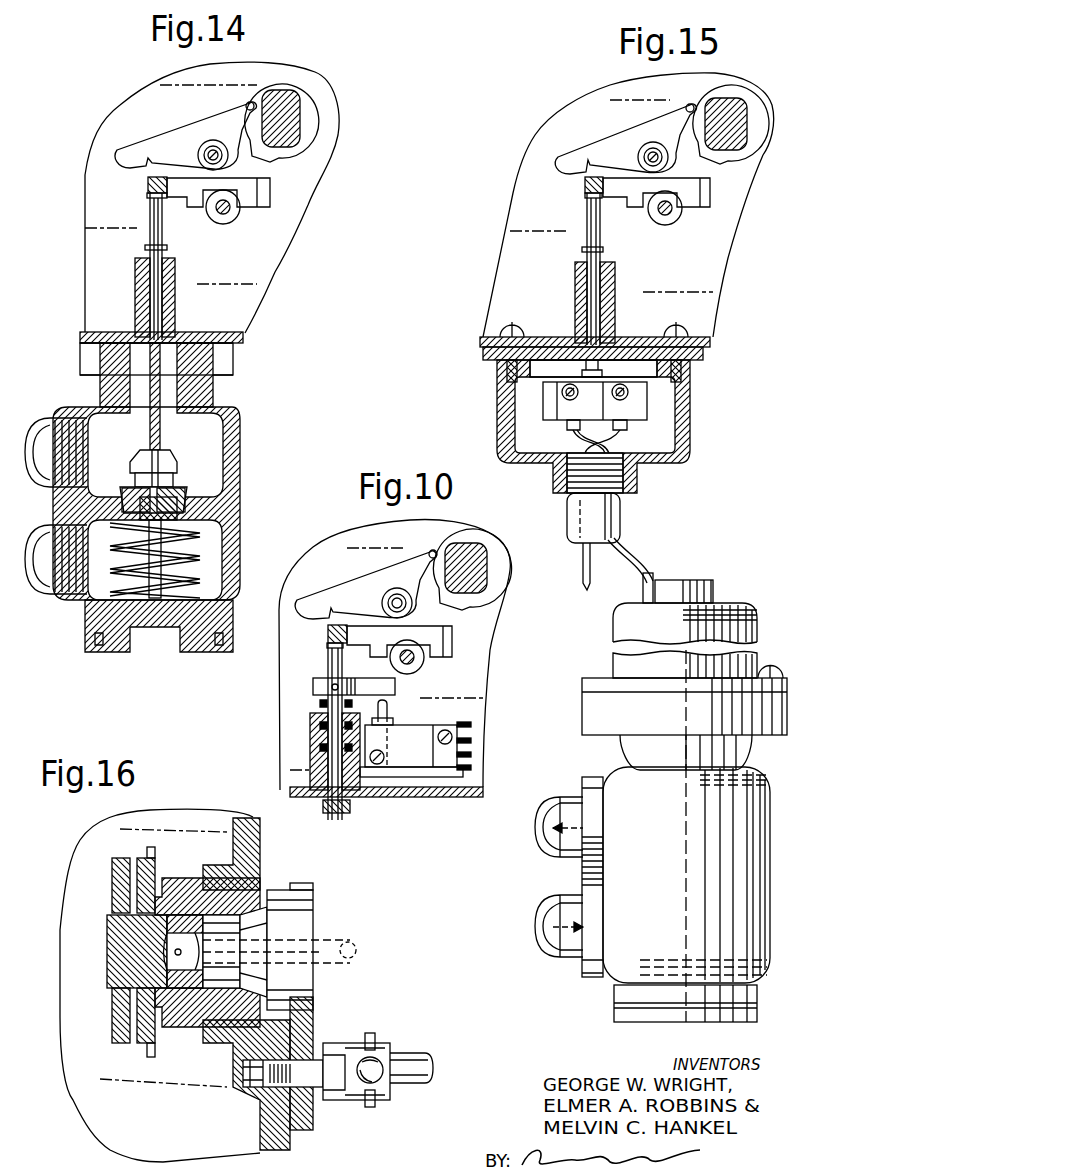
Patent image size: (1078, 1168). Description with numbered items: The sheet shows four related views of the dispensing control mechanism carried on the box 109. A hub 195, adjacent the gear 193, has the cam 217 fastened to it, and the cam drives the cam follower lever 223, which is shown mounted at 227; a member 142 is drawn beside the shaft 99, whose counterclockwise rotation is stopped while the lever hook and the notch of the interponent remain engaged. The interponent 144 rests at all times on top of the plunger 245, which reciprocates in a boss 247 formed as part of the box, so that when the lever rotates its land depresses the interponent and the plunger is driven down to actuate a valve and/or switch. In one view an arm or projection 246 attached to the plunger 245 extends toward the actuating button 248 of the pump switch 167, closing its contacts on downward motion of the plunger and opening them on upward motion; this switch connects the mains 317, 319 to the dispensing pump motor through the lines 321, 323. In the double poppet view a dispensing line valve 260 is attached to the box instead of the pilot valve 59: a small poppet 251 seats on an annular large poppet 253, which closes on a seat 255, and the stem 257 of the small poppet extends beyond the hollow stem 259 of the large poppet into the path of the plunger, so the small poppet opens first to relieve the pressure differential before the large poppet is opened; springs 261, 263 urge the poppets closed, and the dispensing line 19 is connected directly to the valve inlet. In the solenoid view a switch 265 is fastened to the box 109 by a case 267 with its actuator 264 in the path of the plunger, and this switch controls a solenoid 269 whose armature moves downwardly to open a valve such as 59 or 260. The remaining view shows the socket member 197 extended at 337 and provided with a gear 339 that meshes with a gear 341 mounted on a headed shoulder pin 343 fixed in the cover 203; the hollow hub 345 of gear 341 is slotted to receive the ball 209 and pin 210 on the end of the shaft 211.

In FIG. 14, the box 109 is at (252, 265).
In FIG. 15, the box 109 is at (520, 270).
In FIG. 10, the box 109 is at (470, 622).
In FIG. 14, the hub 195 is at (293, 107).
In FIG. 15, the hub 195 is at (730, 107).
In FIG. 10, the hub 195 is at (467, 567).
In FIG. 16, the hub 195 is at (112, 938).
In FIG. 14, the cam 217 is at (318, 124).
In FIG. 15, the cam 217 is at (739, 155).
In FIG. 10, the cam 217 is at (493, 577).
In FIG. 14, the cam follower lever 223 is at (171, 128).
In FIG. 15, the cam follower lever 223 is at (617, 142).
In FIG. 10, the cam follower lever 223 is at (360, 595).
In FIG. 14, the pivot pin 227 is at (217, 154).
In FIG. 15, the pivot pin 227 is at (658, 158).
In FIG. 10, the pivot pin 227 is at (397, 598).
In FIG. 14, the interponent 144 is at (160, 185).
In FIG. 15, the interponent 144 is at (583, 192).
In FIG. 10, the interponent 144 is at (360, 635).
In FIG. 14, the roller 142 is at (250, 190).
In FIG. 15, the roller 142 is at (687, 203).
In FIG. 10, the roller 142 is at (427, 640).
In FIG. 14, the shaft 99 is at (226, 210).
In FIG. 15, the shaft 99 is at (668, 212).
In FIG. 10, the shaft 99 is at (413, 660).
In FIG. 14, the plunger 245 is at (148, 240).
In FIG. 15, the plunger 245 is at (588, 213).
In FIG. 10, the plunger 245 is at (332, 657).
In FIG. 14, the boss 247 is at (170, 303).
In FIG. 15, the boss 247 is at (575, 290).
In FIG. 14, the stem 257 is at (233, 358).
In FIG. 14, the hollow stem 259 is at (213, 380).
In FIG. 14, the dispensing line valve 260 is at (240, 435).
In FIG. 14, the large poppet 253 is at (132, 487).
In FIG. 14, the seat 255 is at (132, 513).
In FIG. 14, the small poppet 251 is at (195, 507).
In FIG. 14, the spring 261 is at (193, 547).
In FIG. 14, the spring 263 is at (190, 570).
In FIG. 14, the dispensing line 19 is at (40, 573).
In FIG. 15, the actuator 264 is at (627, 355).
In FIG. 15, the switch 265 is at (630, 410).
In FIG. 15, the case 267 is at (675, 437).
In FIG. 15, the main 317 is at (648, 571).
In FIG. 10, the main 317 is at (465, 725).
In FIG. 15, the main 319 is at (583, 563).
In FIG. 10, the main 319 is at (470, 740).
In FIG. 10, the line 321 is at (470, 754).
In FIG. 10, the line 323 is at (467, 770).
In FIG. 15, the solenoid 269 is at (733, 607).
In FIG. 15, the pilot valve 59 is at (632, 861).
In FIG. 10, the arm or projection 246 is at (377, 692).
In FIG. 10, the actuating button 248 is at (388, 713).
In FIG. 10, the switch 167 is at (403, 753).
In FIG. 16, the cover 203 is at (247, 837).
In FIG. 16, the gear 193 is at (155, 853).
In FIG. 16, the socket member 197 is at (220, 887).
In FIG. 16, the extension 337 is at (263, 900).
In FIG. 16, the gear 339 is at (313, 890).
In FIG. 16, the shaft 211 is at (320, 943).
In FIG. 16, the gear 341 is at (307, 1023).
In FIG. 16, the hollow hub 345 is at (323, 1050).
In FIG. 16, the pin 210 is at (375, 1035).
In FIG. 16, the ball 209 is at (383, 1080).
In FIG. 16, the headed shoulder pin 343 is at (313, 1070).